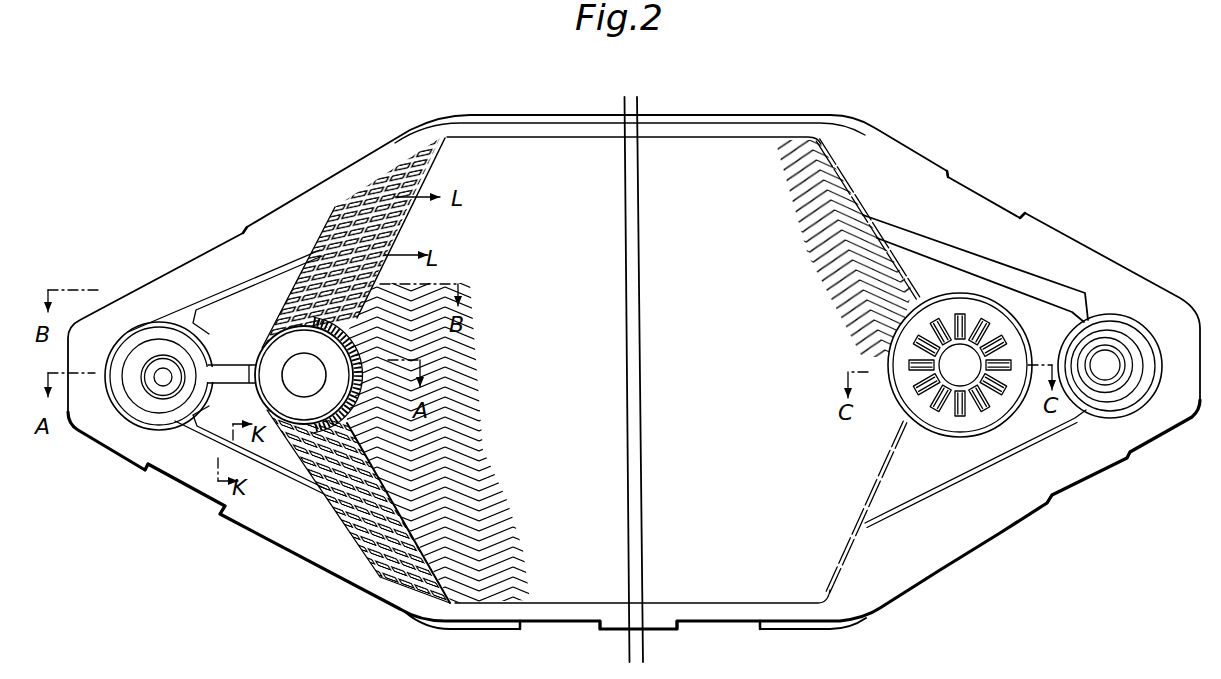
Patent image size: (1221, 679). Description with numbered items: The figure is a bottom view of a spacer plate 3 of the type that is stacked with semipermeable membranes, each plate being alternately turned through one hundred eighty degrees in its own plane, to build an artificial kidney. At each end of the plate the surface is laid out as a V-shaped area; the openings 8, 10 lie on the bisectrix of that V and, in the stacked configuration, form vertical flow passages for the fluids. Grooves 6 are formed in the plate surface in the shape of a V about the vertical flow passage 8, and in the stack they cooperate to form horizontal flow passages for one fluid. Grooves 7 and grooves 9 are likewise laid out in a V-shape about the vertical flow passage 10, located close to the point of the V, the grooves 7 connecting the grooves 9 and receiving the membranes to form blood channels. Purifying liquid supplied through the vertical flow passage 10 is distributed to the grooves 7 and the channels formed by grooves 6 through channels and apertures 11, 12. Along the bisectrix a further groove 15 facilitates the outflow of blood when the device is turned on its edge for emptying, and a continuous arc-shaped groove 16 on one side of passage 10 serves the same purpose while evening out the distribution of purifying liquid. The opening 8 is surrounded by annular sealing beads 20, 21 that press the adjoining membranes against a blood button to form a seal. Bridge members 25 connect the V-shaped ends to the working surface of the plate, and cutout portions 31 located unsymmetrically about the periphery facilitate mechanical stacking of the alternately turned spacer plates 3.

The spacer plate 3 is at (246, 163).
The cutout portion 31 is at (272, 206).
The groove 9 is at (337, 205).
The groove 7 is at (428, 165).
The groove 6 is at (229, 298).
The annular sealing bead 20 is at (163, 338).
The annular sealing bead 21 is at (145, 362).
The opening 8 is at (160, 384).
The groove 15 is at (240, 377).
The groove 16 is at (365, 338).
The opening 10 is at (293, 388).
The bridge member 25 is at (878, 455).
The aperture 12 is at (943, 410).
The channel 11 is at (957, 408).